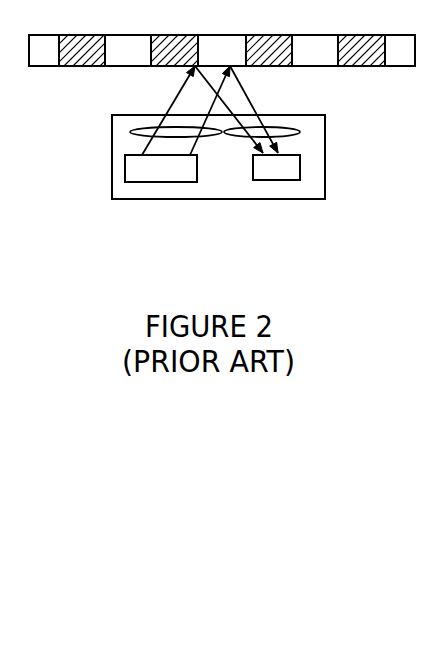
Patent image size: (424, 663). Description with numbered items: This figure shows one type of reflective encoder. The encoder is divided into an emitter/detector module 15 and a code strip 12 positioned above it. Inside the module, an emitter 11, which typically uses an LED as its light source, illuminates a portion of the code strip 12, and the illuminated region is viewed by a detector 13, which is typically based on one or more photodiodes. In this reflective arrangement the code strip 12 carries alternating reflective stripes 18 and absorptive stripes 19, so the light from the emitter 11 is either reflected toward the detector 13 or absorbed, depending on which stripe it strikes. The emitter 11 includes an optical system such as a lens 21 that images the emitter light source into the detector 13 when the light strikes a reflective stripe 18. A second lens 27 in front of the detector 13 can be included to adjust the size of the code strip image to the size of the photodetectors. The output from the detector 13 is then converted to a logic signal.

The emitter 11 is at (173, 178).
The code strip 12 is at (395, 67).
The detector 13 is at (259, 178).
The emitter/detector module 15 is at (325, 188).
The reflective stripes 18 is at (132, 63).
The absorptive stripes 19 is at (84, 63).
The lens 21 is at (130, 132).
The second lens 27 is at (292, 134).